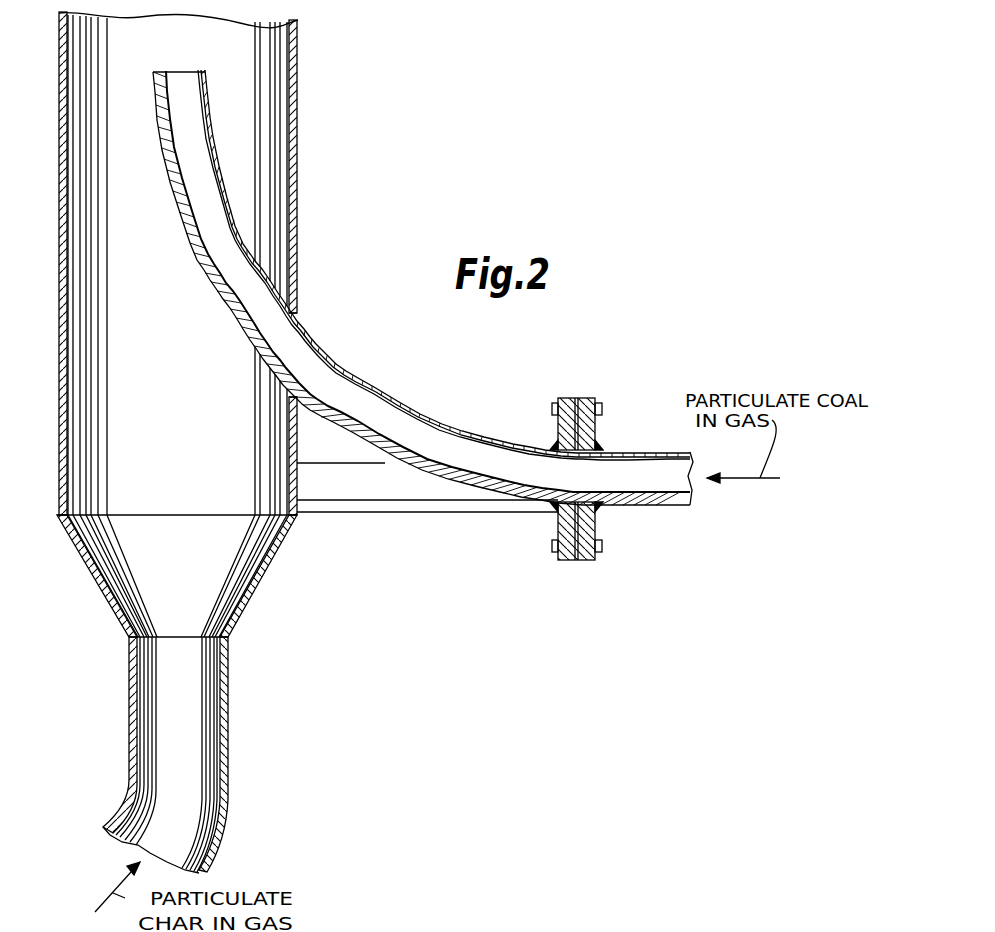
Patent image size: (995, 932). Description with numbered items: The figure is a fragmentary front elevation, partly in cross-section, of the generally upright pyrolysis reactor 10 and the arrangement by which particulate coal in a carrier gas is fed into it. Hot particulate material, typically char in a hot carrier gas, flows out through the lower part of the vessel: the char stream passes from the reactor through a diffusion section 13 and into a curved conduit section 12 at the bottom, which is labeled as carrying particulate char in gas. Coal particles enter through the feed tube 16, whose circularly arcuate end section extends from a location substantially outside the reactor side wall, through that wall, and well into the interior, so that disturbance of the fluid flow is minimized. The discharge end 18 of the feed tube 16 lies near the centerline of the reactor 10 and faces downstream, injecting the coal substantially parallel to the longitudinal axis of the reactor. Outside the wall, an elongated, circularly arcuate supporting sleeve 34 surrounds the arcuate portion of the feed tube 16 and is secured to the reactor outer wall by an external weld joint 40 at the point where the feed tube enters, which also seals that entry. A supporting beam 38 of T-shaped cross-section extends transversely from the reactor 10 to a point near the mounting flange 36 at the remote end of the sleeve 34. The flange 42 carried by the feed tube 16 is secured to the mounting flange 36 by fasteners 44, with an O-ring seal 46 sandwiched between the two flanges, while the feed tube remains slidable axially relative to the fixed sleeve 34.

The pyrolysis reactor 10 is at (298, 240).
The curved conduit section 12 is at (229, 760).
The diffusion section 13 is at (257, 582).
The feed tube 16 is at (423, 278).
The discharge end 18 is at (185, 72).
The supporting sleeve 34 is at (387, 390).
The mounting flange 36 is at (558, 432).
The supporting beam 38 is at (395, 513).
The external weld joint 40 is at (303, 313).
The flange 42 is at (596, 431).
The fasteners 44 is at (553, 547).
The O-ring seal 46 is at (578, 398).